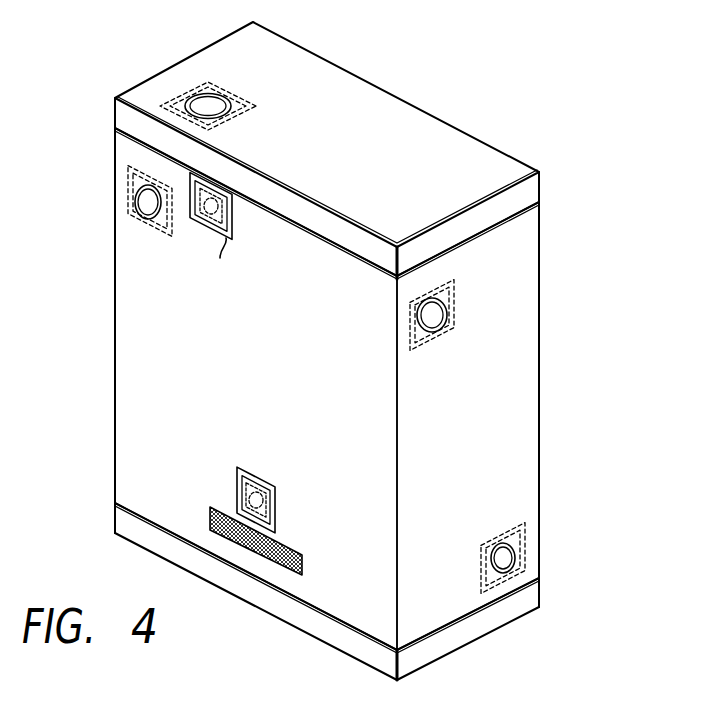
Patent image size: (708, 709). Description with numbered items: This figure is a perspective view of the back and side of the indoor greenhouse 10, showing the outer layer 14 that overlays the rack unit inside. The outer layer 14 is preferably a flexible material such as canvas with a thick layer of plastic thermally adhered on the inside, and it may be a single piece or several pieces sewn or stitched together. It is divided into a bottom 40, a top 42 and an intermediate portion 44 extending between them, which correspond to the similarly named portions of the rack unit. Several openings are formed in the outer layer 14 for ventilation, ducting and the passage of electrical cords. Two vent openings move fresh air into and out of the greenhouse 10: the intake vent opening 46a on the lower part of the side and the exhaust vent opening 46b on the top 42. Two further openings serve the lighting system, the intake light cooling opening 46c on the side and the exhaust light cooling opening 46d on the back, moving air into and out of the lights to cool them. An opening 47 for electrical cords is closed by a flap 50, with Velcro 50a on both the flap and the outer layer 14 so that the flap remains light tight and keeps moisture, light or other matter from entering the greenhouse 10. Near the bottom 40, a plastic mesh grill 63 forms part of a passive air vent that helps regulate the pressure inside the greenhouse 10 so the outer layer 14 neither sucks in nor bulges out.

The indoor greenhouse 10 is at (358, 351).
The outer layer 14 is at (117, 368).
The bottom 40 is at (531, 598).
The top 42 is at (381, 172).
The intermediate portion 44 is at (270, 386).
The intake vent opening 46a is at (506, 558).
The exhaust vent opening 46b is at (206, 104).
The intake light cooling opening 46c is at (434, 315).
The exhaust light cooling opening 46d is at (142, 203).
The opening for electrical cords 47 is at (213, 198).
The flap 50 is at (277, 506).
The Velcro 50a is at (210, 227).
The plastic mesh grill 63 is at (303, 559).